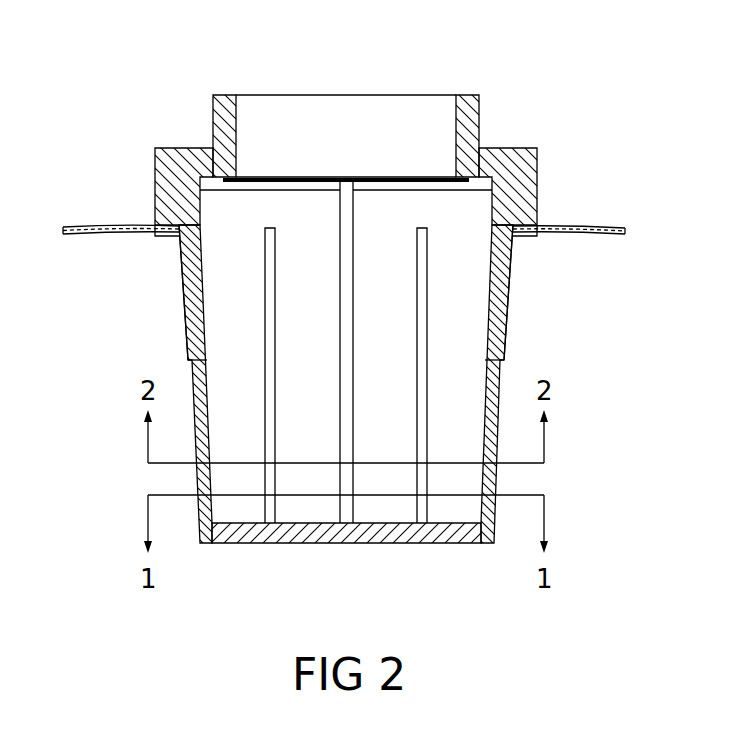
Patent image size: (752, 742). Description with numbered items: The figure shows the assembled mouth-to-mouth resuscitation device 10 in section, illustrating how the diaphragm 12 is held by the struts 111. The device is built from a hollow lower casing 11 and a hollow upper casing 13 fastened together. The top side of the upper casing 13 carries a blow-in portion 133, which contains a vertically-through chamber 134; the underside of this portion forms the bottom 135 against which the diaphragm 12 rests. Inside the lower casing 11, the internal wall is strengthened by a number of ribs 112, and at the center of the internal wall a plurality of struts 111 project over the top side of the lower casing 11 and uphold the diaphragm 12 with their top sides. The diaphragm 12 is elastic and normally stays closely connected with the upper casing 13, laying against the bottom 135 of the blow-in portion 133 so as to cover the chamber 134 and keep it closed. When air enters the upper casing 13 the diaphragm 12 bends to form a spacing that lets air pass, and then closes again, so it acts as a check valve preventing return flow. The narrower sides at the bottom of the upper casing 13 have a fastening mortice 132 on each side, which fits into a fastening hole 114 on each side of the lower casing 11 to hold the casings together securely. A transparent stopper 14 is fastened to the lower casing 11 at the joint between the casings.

The filter device assembly 10 is at (524, 112).
The lower casing 11 is at (183, 305).
The diaphragm 12 is at (375, 172).
The upper casing 13 is at (530, 180).
The transparent stopper 14 is at (100, 229).
The struts 111 is at (350, 400).
The ribs 112 is at (421, 342).
The fastening hole 114 is at (185, 352).
The fastening mortice 132 is at (180, 273).
The blow-in portion 133 is at (468, 112).
The chamber 134 is at (398, 140).
The bottom of the blow-in portion 135 is at (478, 183).